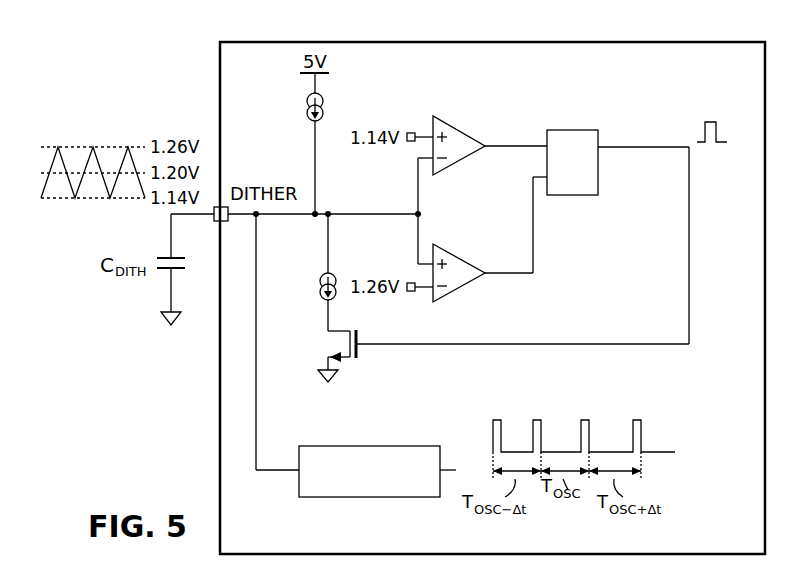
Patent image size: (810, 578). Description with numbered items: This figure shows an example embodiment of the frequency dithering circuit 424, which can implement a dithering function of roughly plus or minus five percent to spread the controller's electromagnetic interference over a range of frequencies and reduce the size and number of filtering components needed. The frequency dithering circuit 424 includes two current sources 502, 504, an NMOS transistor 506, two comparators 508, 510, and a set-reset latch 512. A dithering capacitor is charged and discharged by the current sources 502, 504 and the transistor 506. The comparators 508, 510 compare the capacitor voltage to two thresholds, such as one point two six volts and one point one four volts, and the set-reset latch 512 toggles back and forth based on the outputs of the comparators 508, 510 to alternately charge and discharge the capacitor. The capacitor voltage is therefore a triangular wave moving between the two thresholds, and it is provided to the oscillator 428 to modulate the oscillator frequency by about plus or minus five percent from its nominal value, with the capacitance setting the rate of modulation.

The frequency dithering circuit 424 is at (754, 541).
The oscillator 428 is at (395, 446).
The current source 502 is at (307, 100).
The current source 504 is at (335, 272).
The NMOS transistor 506 is at (331, 336).
The comparator 508 is at (463, 132).
The comparator 510 is at (476, 280).
The set-reset latch 512 is at (581, 130).